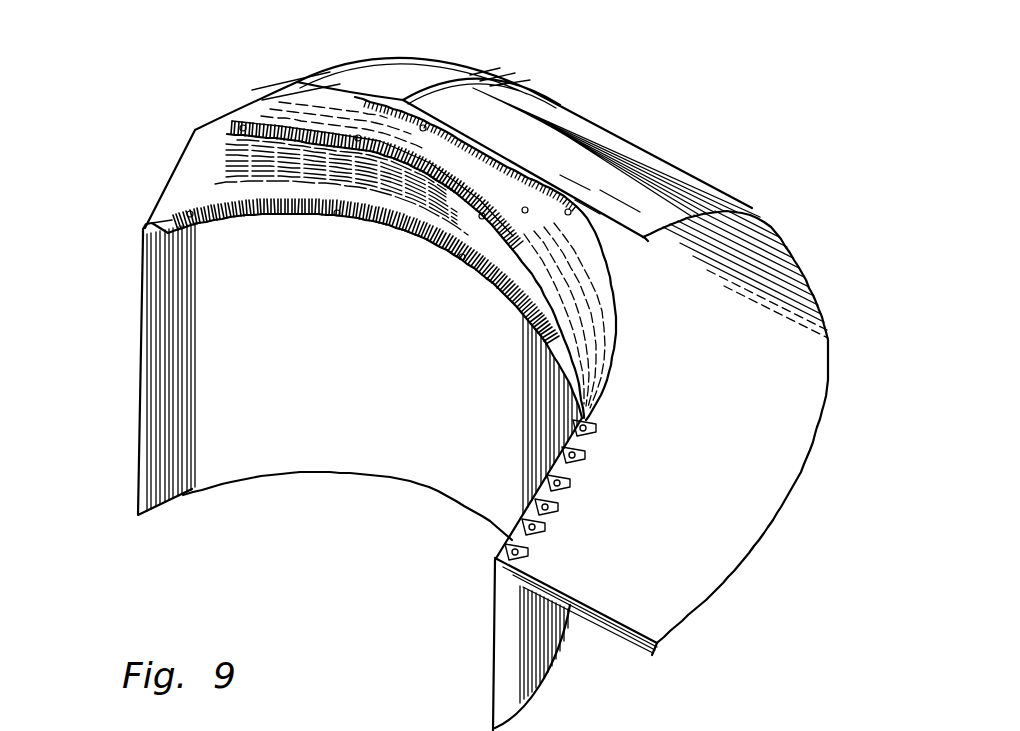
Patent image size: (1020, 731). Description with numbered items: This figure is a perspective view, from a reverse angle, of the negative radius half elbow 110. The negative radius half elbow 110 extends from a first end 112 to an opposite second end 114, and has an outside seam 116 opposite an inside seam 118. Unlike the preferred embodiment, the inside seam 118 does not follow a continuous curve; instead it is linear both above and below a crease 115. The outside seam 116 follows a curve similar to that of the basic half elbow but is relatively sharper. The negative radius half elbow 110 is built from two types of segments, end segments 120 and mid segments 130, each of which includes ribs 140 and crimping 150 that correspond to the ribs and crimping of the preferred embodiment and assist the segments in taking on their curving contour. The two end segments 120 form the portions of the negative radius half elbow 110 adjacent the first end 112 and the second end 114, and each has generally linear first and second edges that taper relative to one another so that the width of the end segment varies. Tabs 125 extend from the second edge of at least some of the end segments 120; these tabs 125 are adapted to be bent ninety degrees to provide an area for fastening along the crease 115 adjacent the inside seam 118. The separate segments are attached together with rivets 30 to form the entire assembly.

The negative radius half elbow 110 is at (760, 162).
The first end 112 is at (785, 500).
The second end 114 is at (184, 495).
The crease 115 is at (495, 560).
The outside seam 116 is at (143, 340).
The inside seam 118 is at (495, 657).
The end segments 120 is at (352, 416).
The tabs 125 is at (570, 486).
The mid segments 130 is at (243, 106).
The ribs 140 is at (543, 103).
The crimping 150 is at (257, 218).
The rivets 30 is at (462, 261).